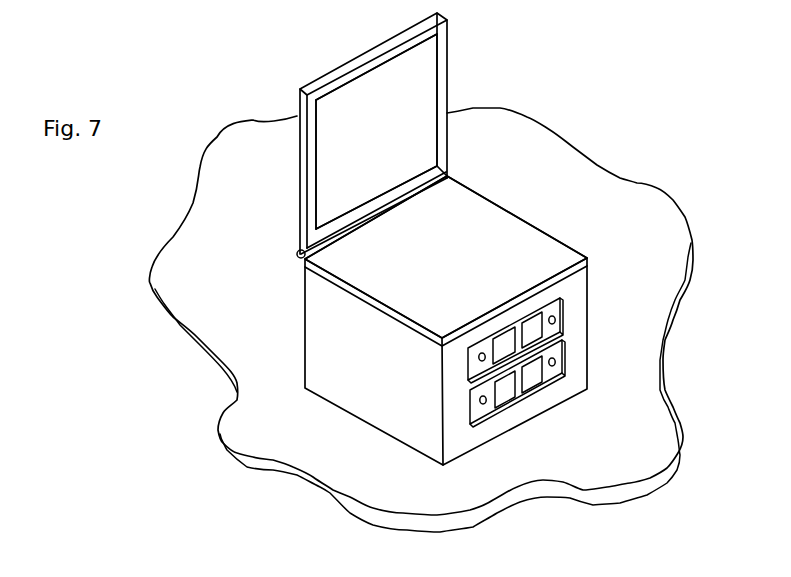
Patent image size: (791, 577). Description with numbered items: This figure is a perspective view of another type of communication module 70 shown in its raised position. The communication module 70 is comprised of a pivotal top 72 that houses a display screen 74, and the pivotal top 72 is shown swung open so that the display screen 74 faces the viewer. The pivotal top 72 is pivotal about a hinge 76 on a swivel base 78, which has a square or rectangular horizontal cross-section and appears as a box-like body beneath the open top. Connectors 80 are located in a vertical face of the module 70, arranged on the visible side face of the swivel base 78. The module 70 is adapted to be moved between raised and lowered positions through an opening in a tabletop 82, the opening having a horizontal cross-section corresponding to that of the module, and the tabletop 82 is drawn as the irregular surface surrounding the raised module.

The communication module 70 is at (503, 177).
The pivotal top 72 is at (302, 103).
The display screen 74 is at (358, 143).
The hinge 76 is at (298, 252).
The swivel base 78 is at (415, 269).
The connectors 80 is at (503, 387).
The tabletop 82 is at (193, 247).